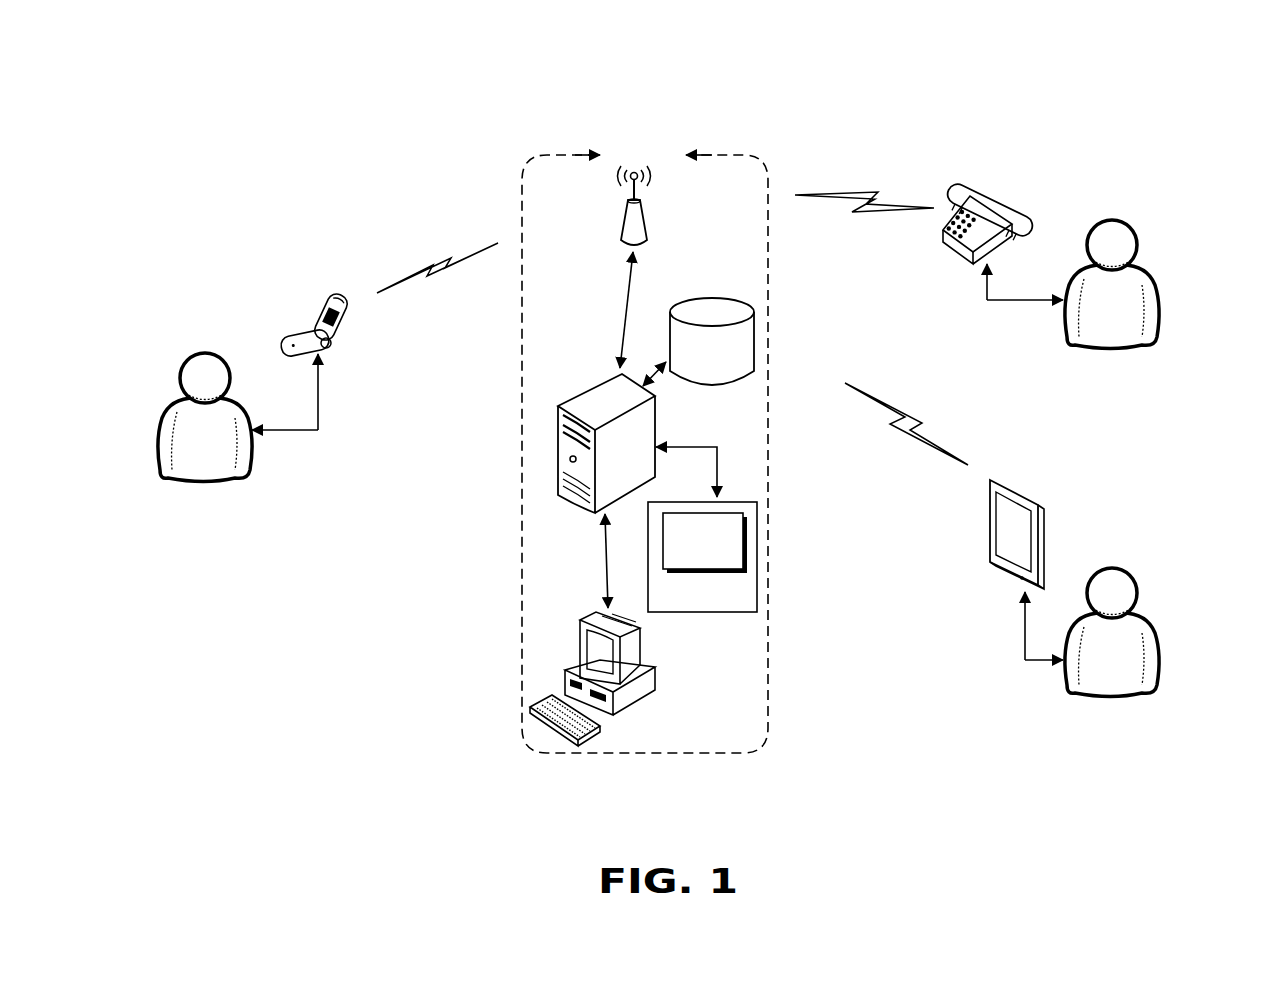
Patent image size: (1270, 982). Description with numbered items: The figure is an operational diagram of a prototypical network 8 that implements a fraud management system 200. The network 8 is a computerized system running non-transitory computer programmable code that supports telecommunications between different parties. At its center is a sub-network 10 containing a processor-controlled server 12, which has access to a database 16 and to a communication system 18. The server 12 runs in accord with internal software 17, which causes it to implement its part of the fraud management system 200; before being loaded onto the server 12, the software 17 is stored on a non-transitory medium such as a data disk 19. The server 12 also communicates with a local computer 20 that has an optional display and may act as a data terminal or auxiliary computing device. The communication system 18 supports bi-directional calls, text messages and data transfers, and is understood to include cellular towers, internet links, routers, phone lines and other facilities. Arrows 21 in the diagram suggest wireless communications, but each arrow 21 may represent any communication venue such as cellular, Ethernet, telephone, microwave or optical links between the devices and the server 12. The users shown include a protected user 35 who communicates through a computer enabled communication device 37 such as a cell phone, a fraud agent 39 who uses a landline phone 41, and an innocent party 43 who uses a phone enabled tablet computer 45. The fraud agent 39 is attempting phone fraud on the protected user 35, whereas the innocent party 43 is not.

The fraud management system 200 is at (304, 116).
The network 8 is at (1052, 115).
The sub-network 10 is at (768, 180).
The server 12 is at (557, 433).
The database 16 is at (746, 350).
The software 17 is at (748, 535).
The communication system 18 is at (648, 222).
The data disk 19 is at (735, 608).
The local computer 20 is at (565, 630).
The arrows 21 is at (425, 258).
The protected user 35 is at (180, 389).
The communication device 37 is at (282, 330).
The fraud agent 39 is at (1158, 293).
The landline phone 41 is at (1020, 213).
The innocent party 43 is at (1158, 636).
The tablet computer 45 is at (1046, 508).